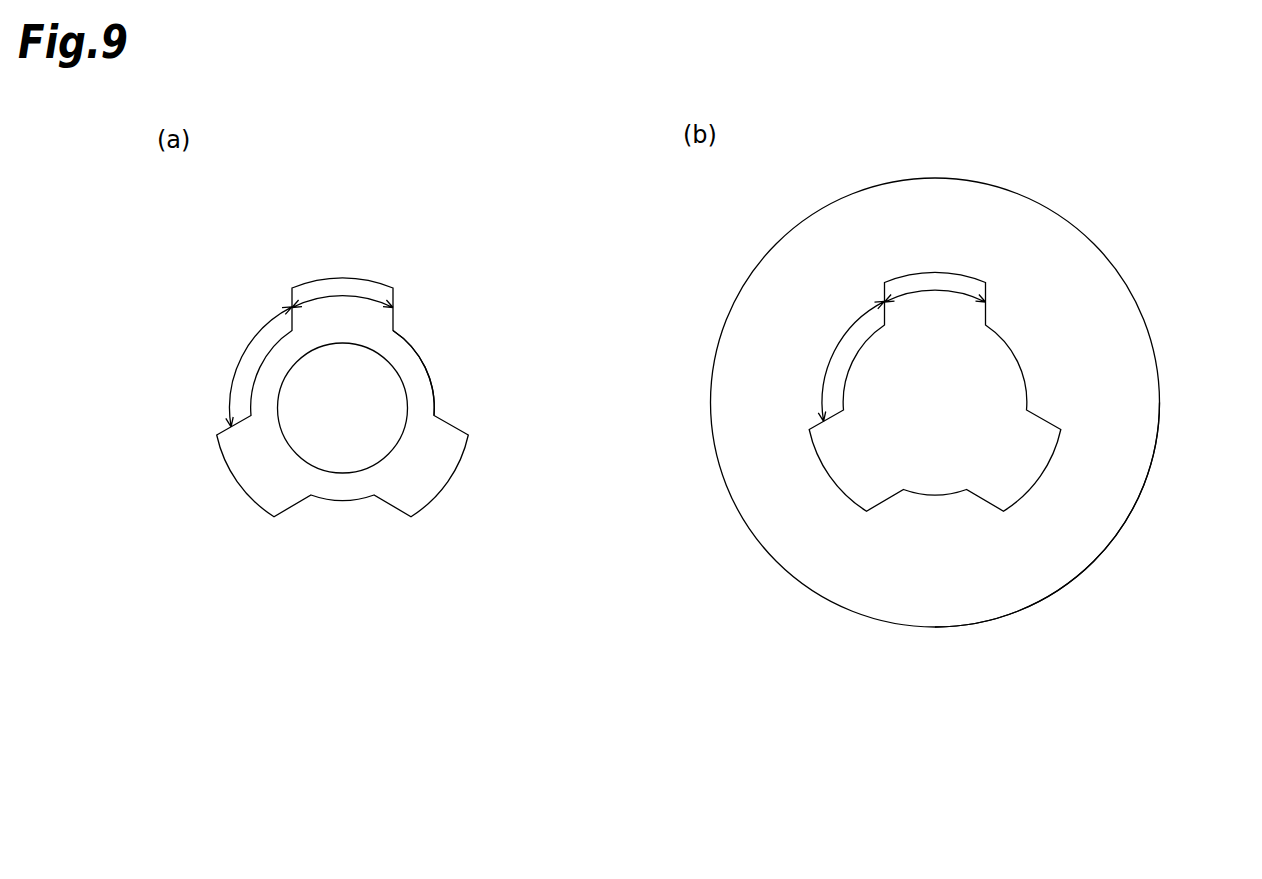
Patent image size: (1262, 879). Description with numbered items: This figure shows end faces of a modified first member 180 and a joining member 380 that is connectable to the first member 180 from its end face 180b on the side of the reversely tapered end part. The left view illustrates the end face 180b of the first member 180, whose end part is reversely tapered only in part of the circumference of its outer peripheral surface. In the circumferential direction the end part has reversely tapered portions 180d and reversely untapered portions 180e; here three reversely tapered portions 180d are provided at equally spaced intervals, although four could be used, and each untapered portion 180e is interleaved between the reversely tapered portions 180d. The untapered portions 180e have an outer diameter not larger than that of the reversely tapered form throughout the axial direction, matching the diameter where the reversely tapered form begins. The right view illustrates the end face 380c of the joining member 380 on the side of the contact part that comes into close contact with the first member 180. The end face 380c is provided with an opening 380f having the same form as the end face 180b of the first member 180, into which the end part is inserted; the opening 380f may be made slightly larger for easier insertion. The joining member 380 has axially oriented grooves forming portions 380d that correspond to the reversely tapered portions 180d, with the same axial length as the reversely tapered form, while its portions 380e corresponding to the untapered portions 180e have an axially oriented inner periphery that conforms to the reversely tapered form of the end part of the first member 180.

The first member 180 is at (358, 248).
The end face 180b is at (433, 378).
The reversely tapered portions 180d is at (368, 297).
The reversely untapered portions 180e is at (245, 355).
The joining member 380 is at (1132, 233).
The end face 380c is at (1134, 510).
The groove portions 380d is at (942, 292).
The portions corresponding to reversely untapered portions 380e is at (837, 350).
The opening 380f is at (1027, 372).